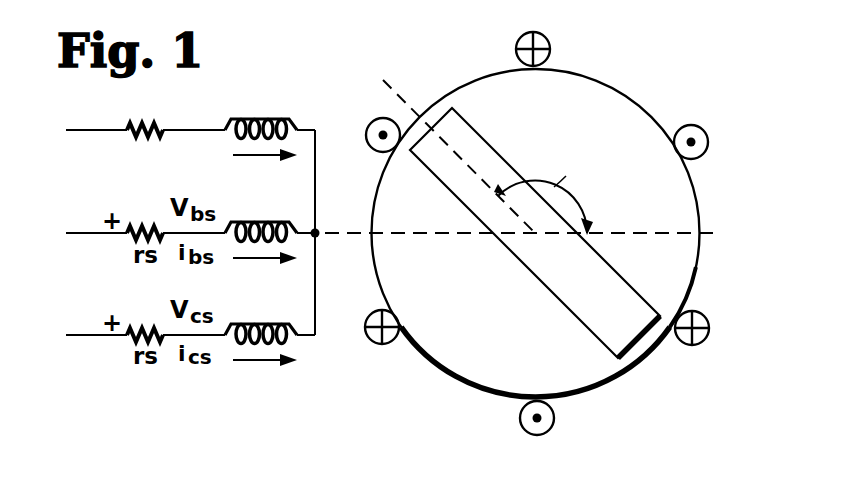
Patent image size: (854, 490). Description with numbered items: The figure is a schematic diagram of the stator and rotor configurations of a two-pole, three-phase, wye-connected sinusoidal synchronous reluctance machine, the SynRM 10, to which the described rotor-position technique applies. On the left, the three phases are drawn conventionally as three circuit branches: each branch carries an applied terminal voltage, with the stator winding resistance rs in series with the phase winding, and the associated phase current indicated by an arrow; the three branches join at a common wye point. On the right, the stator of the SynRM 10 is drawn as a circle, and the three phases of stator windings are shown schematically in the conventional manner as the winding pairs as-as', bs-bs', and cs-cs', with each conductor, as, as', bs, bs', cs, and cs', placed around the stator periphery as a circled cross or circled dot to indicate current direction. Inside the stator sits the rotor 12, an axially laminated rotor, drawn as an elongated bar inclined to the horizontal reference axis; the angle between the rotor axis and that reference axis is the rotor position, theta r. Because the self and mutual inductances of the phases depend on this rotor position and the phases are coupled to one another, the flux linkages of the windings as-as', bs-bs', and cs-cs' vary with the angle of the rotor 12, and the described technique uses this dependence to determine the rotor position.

The synchronous reluctance machine (SynRM) 10 is at (446, 78).
The rotor 12 is at (605, 350).
The phase as stator winding as is at (545, 38).
The phase as stator winding return as' is at (547, 430).
The phase bs stator winding bs is at (382, 339).
The phase bs stator winding return bs' is at (700, 128).
The phase cs stator winding cs is at (694, 341).
The phase cs stator winding return cs' is at (376, 123).
The stator winding resistance rs is at (190, 128).